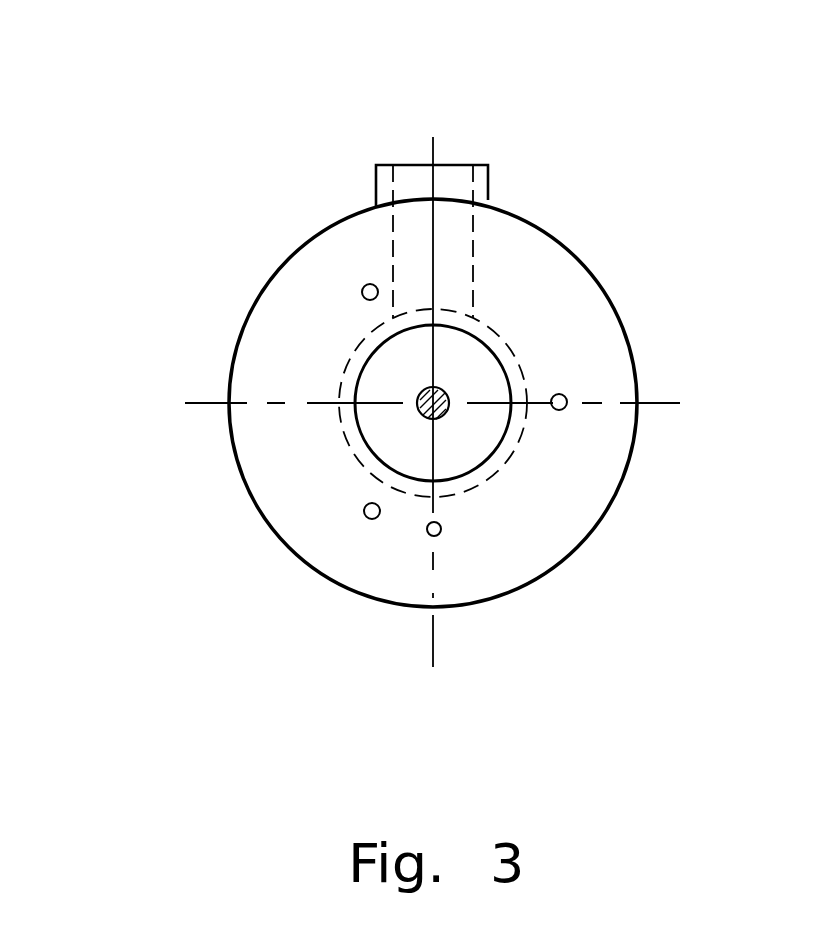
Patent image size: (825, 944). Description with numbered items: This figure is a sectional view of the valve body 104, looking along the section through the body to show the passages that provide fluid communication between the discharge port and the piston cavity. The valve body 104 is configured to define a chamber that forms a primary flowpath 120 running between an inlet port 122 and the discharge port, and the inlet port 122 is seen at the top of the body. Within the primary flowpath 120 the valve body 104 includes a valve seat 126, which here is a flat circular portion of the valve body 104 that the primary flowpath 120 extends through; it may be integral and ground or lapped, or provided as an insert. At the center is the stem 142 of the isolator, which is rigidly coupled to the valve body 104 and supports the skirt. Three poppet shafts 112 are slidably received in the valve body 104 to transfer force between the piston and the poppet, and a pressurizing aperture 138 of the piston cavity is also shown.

The valve body 104 is at (550, 230).
The poppet shaft 112 is at (360, 293).
The primary flowpath 120 is at (413, 183).
The inlet port 122 is at (456, 163).
The valve seat 126 is at (503, 457).
The pressurizing aperture 138 is at (441, 536).
The stem 142 is at (418, 396).